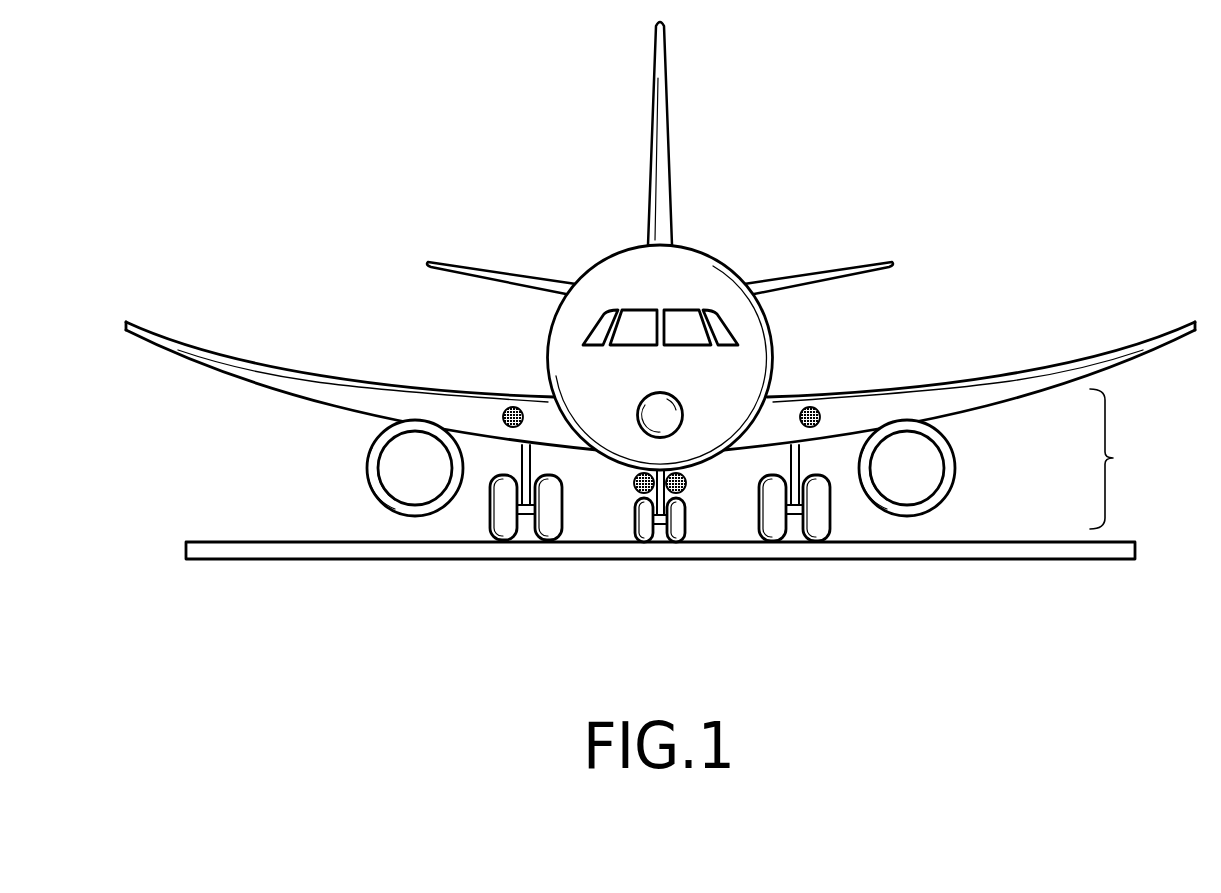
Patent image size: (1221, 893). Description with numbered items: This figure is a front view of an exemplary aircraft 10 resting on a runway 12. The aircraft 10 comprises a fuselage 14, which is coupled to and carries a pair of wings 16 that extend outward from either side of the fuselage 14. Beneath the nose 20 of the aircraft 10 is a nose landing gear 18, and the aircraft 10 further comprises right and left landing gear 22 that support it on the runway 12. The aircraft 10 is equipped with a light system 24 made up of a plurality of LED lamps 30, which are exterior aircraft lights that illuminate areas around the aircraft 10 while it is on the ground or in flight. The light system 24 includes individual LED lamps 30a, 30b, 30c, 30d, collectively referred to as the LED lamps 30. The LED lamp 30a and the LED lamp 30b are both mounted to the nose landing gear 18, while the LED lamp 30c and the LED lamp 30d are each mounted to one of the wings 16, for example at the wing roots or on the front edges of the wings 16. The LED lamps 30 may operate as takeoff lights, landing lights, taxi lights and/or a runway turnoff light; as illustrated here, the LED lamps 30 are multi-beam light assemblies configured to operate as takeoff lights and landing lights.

The aircraft 10 is at (288, 124).
The runway 12 is at (996, 542).
The fuselage 14 is at (755, 350).
The wings 16 is at (343, 398).
The nose landing gear 18 is at (658, 524).
The nose 20 is at (674, 396).
The landing gear 22 is at (527, 515).
The light system 24 is at (1113, 458).
The LED lamps 30 is at (650, 438).
The LED lamp 30a is at (634, 484).
The LED lamp 30b is at (686, 482).
The LED lamp 30c is at (507, 409).
The LED lamp 30d is at (813, 409).